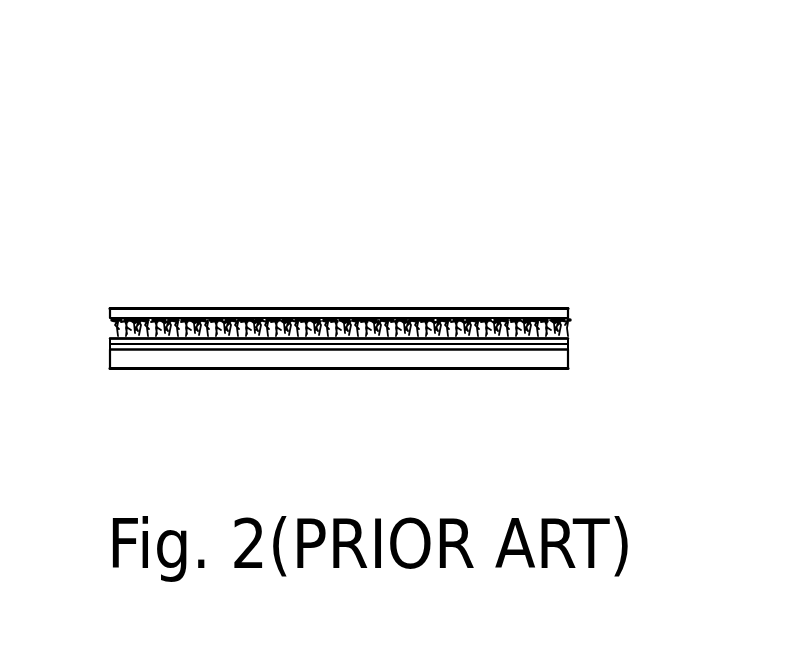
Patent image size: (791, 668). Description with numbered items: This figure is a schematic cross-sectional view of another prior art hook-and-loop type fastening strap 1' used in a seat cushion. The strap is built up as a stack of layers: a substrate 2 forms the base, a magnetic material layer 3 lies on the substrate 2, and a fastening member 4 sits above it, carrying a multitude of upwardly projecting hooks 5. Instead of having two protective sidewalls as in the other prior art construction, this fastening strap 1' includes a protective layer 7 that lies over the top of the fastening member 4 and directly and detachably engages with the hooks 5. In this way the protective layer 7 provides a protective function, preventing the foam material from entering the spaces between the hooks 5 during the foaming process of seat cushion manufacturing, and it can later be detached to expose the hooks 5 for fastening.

The hook-and-loop type fastening strap 1' is at (339, 193).
The substrate 2 is at (545, 365).
The magnetic material layer 3 is at (466, 345).
The fastening member 4 is at (405, 334).
The hooks 5 is at (481, 334).
The protective layer 7 is at (555, 312).